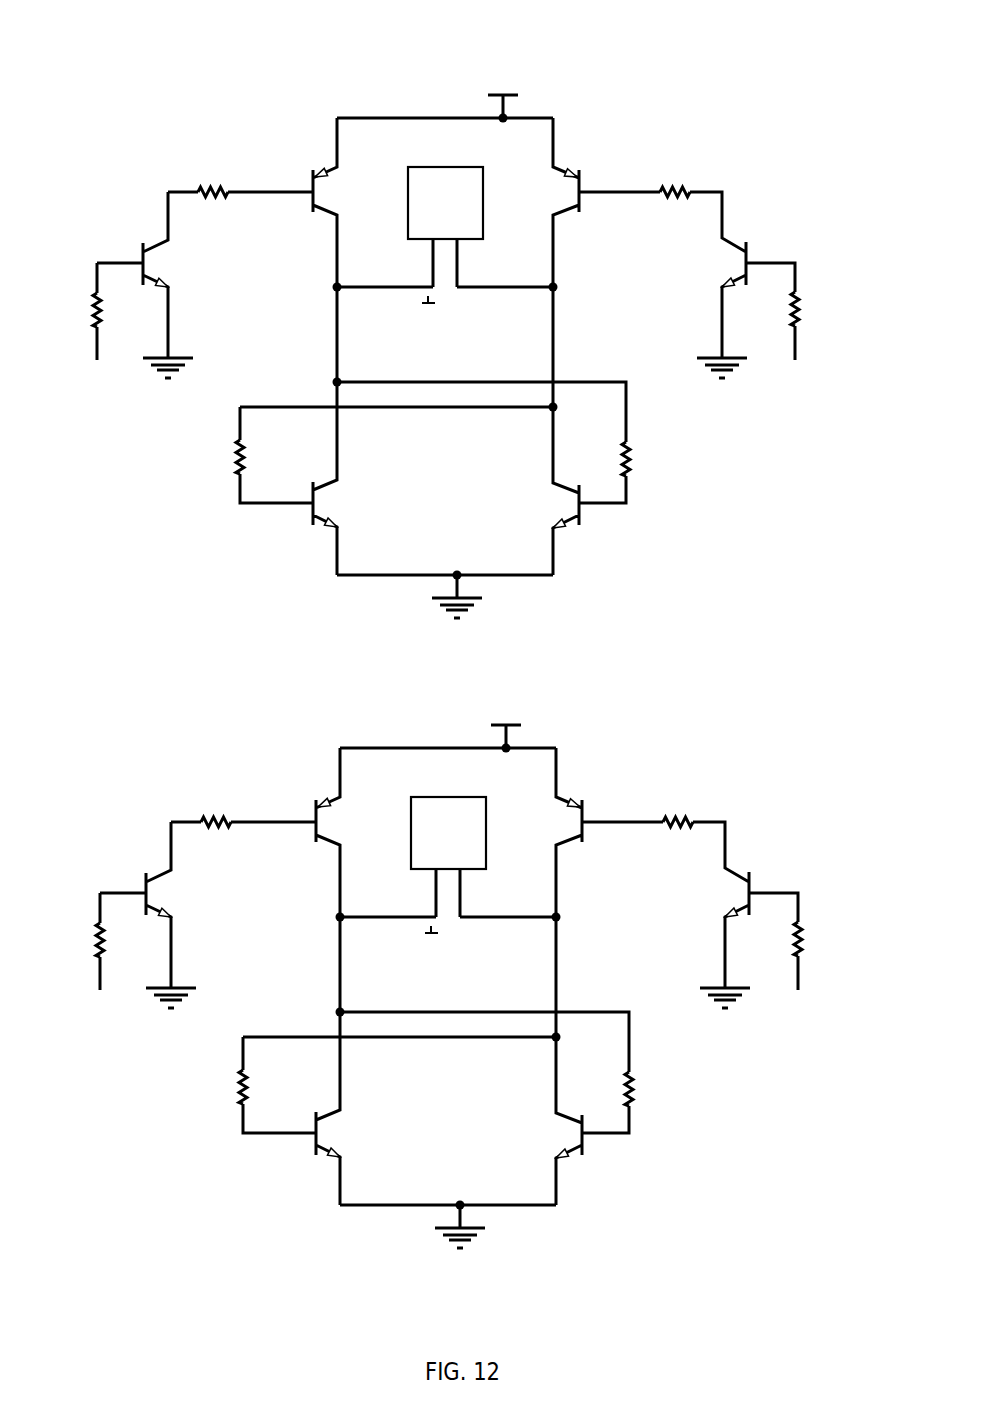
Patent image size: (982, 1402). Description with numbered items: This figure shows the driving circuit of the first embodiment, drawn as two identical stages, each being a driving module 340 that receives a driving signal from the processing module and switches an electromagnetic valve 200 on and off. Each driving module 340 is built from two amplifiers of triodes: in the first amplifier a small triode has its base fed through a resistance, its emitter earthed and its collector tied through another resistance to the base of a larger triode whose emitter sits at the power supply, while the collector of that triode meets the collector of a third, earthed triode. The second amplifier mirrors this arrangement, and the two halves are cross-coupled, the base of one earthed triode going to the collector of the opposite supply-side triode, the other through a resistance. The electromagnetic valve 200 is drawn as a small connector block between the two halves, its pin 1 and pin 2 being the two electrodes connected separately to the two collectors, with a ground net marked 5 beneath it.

The driving module 340 is at (464, 646).
The electromagnetic valve 200 is at (436, 482).
The ground net of connector 5 is at (423, 620).
The connector pin 1 is at (456, 823).
The connector pin 2 is at (432, 564).